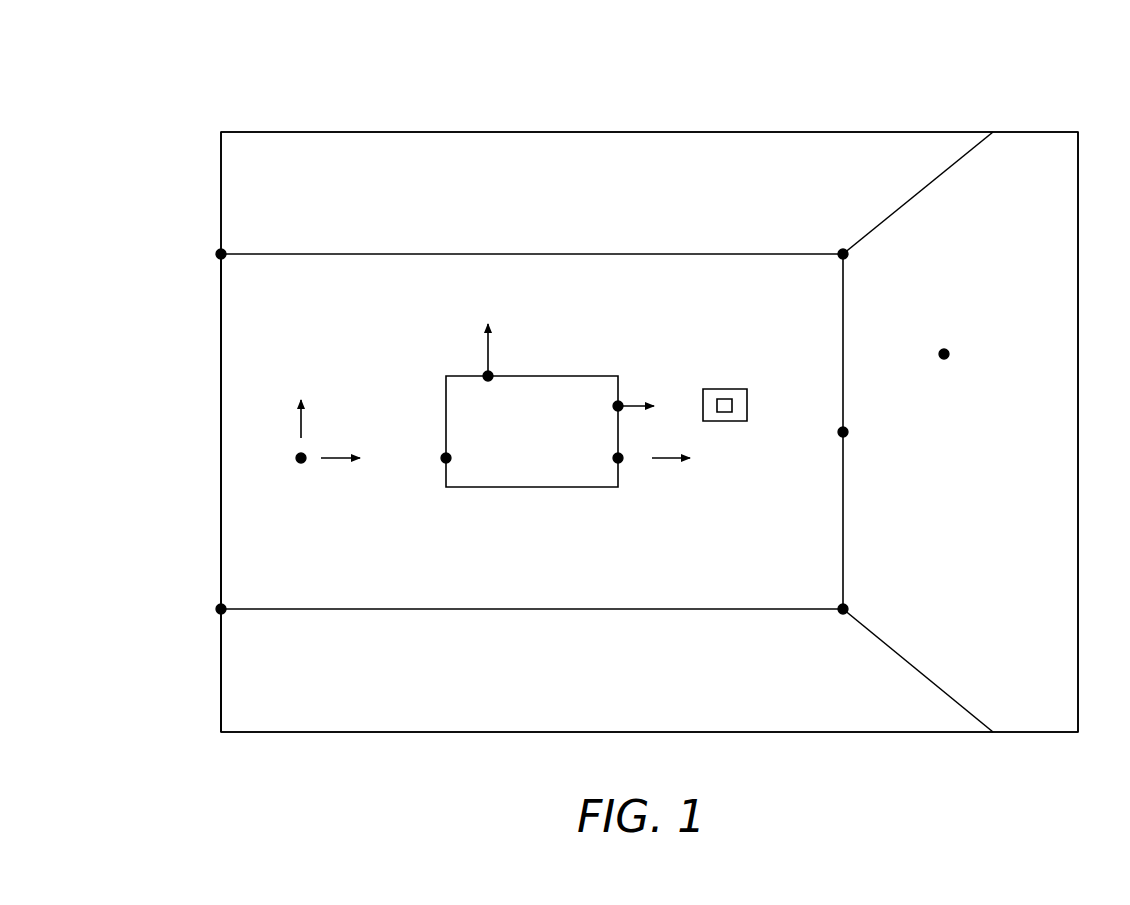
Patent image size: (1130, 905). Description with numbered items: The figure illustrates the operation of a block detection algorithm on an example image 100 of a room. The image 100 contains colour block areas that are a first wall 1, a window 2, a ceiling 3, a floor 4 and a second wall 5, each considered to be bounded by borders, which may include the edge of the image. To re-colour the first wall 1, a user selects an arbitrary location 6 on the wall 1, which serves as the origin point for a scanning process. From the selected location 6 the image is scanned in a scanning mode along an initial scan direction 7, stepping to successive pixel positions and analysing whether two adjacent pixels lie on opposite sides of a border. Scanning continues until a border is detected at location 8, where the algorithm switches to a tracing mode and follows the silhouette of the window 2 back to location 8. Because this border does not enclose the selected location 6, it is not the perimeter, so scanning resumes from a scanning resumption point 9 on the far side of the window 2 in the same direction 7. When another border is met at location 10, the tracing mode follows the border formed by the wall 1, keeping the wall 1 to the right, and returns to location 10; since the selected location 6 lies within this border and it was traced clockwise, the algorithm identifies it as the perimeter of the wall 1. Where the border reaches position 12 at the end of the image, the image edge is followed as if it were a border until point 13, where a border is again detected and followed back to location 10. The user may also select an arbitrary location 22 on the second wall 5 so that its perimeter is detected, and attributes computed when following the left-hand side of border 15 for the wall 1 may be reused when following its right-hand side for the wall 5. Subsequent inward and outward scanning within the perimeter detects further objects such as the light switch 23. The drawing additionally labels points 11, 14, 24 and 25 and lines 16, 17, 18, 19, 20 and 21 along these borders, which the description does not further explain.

The image 100 is at (1037, 132).
The first wall 1 is at (230, 517).
The window 2 is at (597, 376).
The ceiling 3 is at (638, 132).
The floor 4 is at (638, 732).
The second wall 5 is at (1068, 432).
The selected location 6 is at (301, 464).
The initial scan direction 7 is at (343, 460).
The border detection location 8 is at (442, 462).
The scanning resumption point 9 is at (622, 462).
The border detection location 10 is at (848, 432).
The boundary corner point 11 is at (848, 608).
The image edge position 12 is at (221, 609).
The border detection point 13 is at (221, 254).
The boundary corner point 14 is at (848, 256).
The border 15 is at (843, 519).
The lower diagonal line 16 is at (950, 697).
The lower boundary line 17 is at (430, 609).
The left boundary line 18 is at (221, 432).
The upper boundary line 19 is at (430, 254).
The lower left edge segment 20 is at (221, 672).
The upper diagonal line 21 is at (950, 167).
The selected location on second wall 22 is at (950, 354).
The light switch 23 is at (303, 416).
The point on region 24 is at (488, 376).
The point on region 25 is at (622, 410).